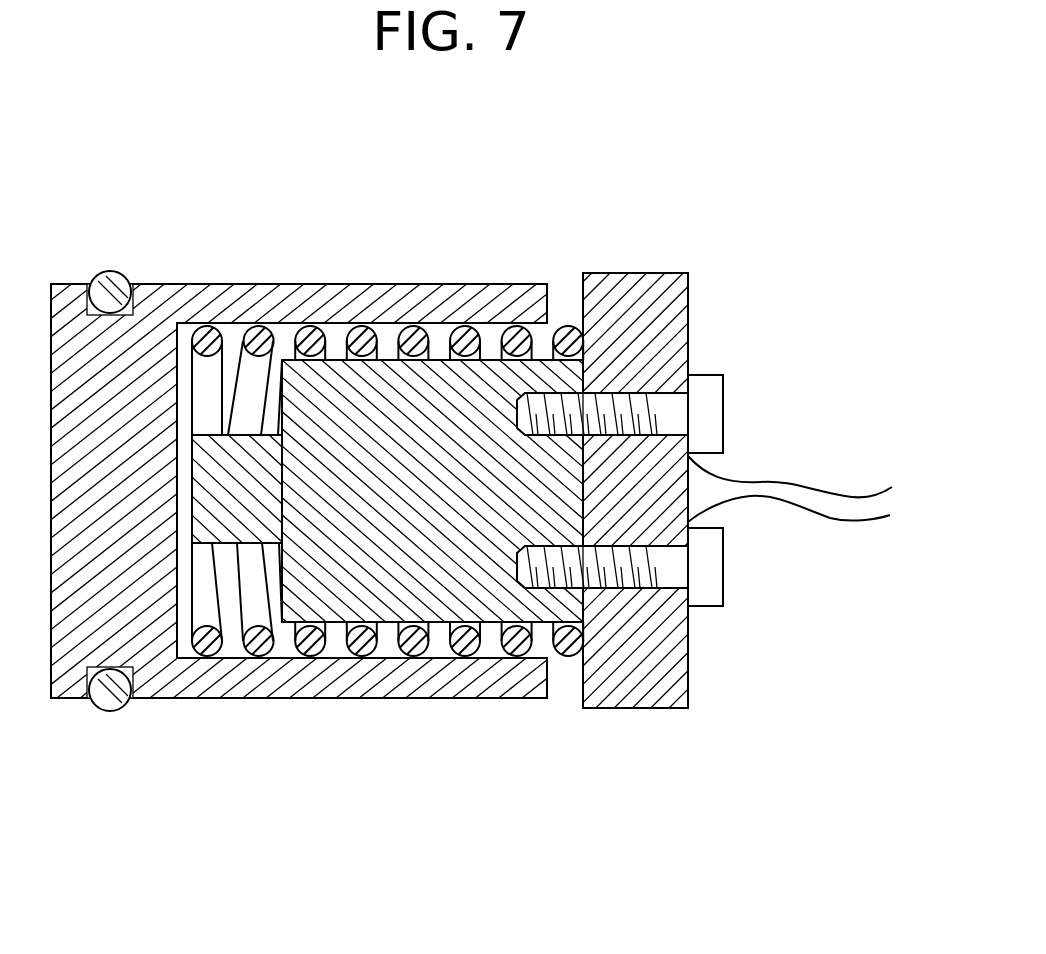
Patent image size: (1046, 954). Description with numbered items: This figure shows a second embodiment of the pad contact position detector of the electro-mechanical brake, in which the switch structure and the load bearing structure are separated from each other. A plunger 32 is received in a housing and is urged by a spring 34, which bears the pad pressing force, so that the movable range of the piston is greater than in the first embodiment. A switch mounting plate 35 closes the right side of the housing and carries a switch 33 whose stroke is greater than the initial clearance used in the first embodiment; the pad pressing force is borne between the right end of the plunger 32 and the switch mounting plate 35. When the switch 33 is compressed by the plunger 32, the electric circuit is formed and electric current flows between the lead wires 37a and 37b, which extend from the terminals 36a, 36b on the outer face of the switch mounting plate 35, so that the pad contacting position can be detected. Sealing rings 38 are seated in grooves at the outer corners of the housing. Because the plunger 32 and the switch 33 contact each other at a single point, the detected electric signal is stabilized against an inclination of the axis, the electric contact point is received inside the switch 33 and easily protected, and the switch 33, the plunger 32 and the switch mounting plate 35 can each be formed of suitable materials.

The plunger 32 is at (222, 700).
The switch 33 is at (393, 613).
The spring 34 is at (482, 657).
The switch mounting plate 35 is at (636, 273).
The terminal 36a is at (715, 375).
The terminal 36b is at (716, 606).
The lead wire 37a is at (843, 497).
The lead wire 37b is at (858, 525).
The O-ring 38 is at (110, 272).